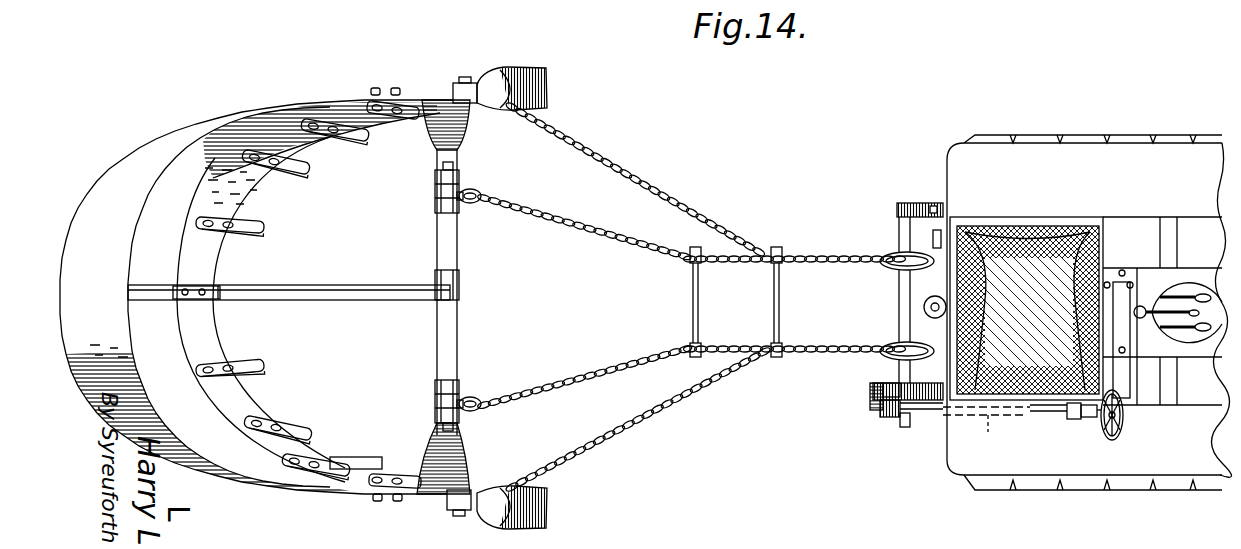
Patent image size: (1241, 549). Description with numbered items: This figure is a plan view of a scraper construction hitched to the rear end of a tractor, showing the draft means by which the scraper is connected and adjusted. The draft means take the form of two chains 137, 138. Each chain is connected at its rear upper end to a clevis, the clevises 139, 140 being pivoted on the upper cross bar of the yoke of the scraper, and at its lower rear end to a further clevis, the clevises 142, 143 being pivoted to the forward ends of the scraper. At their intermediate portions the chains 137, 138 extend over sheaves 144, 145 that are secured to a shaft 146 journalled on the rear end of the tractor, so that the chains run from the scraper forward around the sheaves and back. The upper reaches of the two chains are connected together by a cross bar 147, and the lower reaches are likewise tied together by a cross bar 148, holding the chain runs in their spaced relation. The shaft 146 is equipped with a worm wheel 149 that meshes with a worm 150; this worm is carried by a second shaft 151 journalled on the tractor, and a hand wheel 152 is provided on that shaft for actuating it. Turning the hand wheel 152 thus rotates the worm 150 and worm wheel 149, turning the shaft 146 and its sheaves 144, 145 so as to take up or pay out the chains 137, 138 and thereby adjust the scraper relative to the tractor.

The chain 137 is at (608, 234).
The chain 138 is at (598, 373).
The clevis 139 is at (468, 188).
The clevis 140 is at (483, 406).
The clevis 142 is at (512, 128).
The clevis 143 is at (500, 483).
The sheave 144 is at (887, 257).
The sheave 145 is at (880, 357).
The shaft 146 is at (905, 203).
The cross bar 147 is at (692, 308).
The cross bar 148 is at (781, 307).
The worm wheel 149 is at (910, 427).
The worm 150 is at (880, 418).
The shaft 151 is at (1033, 413).
The hand wheel 152 is at (1122, 418).